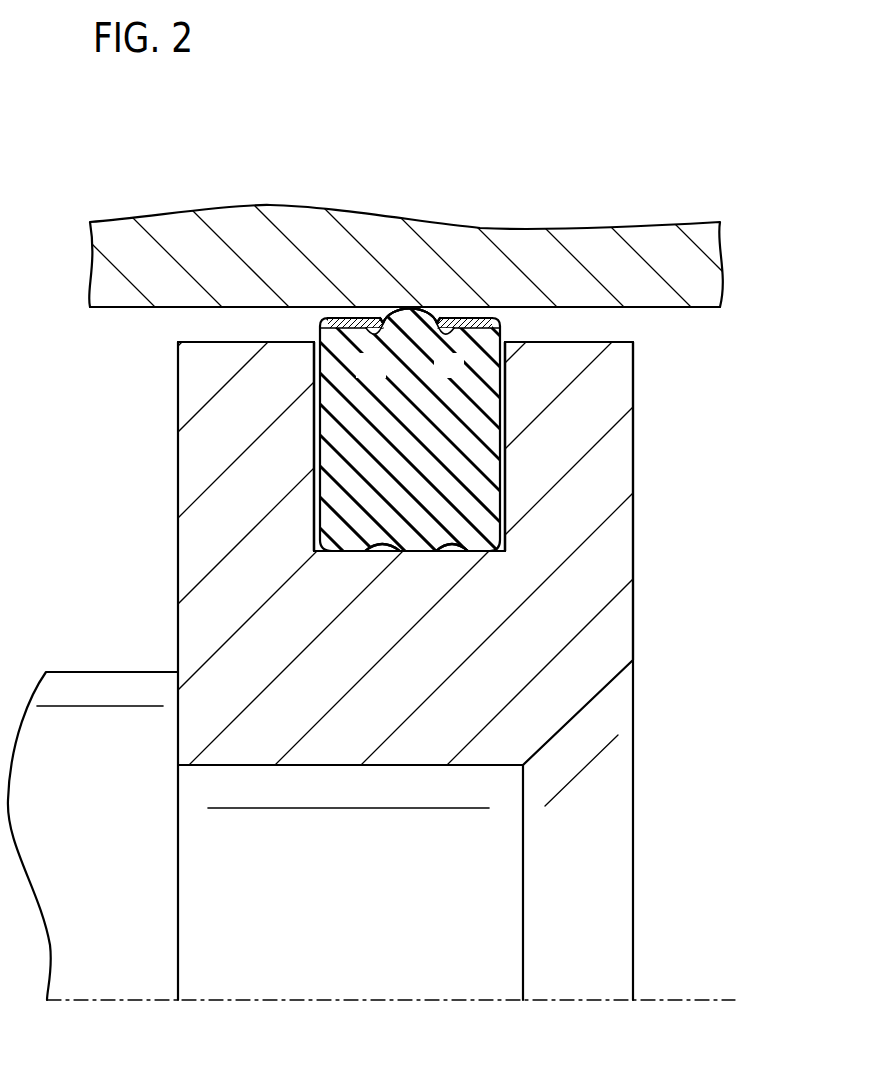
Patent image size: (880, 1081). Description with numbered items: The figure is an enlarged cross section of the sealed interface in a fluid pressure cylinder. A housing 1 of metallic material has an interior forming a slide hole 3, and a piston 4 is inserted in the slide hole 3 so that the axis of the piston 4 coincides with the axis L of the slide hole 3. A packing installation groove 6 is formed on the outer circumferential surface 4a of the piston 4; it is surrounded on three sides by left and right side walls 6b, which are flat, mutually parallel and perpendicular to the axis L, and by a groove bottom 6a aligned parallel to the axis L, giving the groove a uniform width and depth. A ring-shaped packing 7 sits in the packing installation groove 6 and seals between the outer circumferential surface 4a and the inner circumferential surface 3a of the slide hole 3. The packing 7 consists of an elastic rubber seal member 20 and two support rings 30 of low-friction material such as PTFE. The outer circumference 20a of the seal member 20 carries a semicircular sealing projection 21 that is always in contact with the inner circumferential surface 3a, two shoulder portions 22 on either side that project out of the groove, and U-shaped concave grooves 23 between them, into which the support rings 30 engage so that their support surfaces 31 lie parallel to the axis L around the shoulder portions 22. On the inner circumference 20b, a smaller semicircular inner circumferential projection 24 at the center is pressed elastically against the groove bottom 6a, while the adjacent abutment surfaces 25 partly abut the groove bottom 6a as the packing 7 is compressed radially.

The housing 1 is at (590, 238).
The slide hole 3 is at (657, 308).
The inner circumferential surface of the slide hole 3a is at (250, 308).
The piston 4 is at (608, 462).
The outer circumferential surface of the piston 4a is at (203, 342).
The packing installation groove 6 is at (313, 414).
The groove bottom 6a is at (490, 544).
The side walls 6b is at (318, 462).
The packing 7 is at (578, 419).
The seal member 20 is at (392, 413).
The outer circumference of the seal member 20a is at (378, 306).
The inner circumference of the seal member 20b is at (375, 555).
The sealing projection 21 is at (410, 316).
The shoulder portions 22 is at (342, 326).
The concave grooves 23 is at (380, 336).
The inner circumferential projection 24 is at (413, 548).
The abutment surfaces 25 is at (350, 542).
The support rings 30 is at (332, 319).
The support surfaces 31 is at (365, 322).
The axis L is at (697, 998).